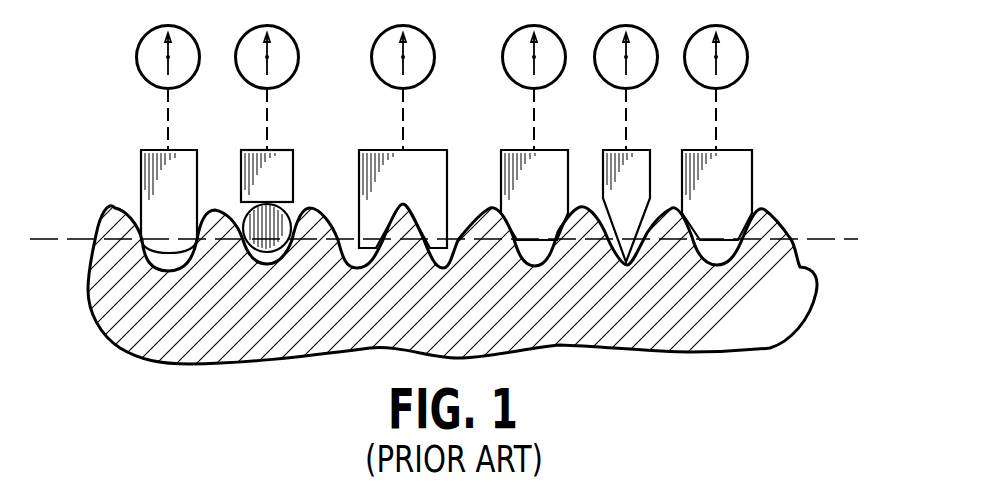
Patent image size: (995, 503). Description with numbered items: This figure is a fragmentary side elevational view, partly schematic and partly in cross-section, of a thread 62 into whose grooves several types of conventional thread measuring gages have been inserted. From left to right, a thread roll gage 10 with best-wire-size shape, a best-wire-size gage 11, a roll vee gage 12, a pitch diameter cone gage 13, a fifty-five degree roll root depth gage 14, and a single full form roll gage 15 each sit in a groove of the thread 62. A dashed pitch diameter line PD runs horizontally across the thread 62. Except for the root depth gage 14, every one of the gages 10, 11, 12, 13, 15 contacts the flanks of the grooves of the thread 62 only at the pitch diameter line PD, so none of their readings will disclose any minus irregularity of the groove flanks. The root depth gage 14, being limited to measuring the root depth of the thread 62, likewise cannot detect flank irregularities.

The thread roll gage with best-wire-size shape 10 is at (152, 172).
The best-wire-size gage 11 is at (277, 157).
The roll vee gage 12 is at (422, 165).
The pitch diameter cone gage 13 is at (547, 163).
The 55° roll root depth gage 14 is at (637, 157).
The single full form roll gage 15 is at (735, 157).
The thread 62 is at (717, 322).
The pitch diameter line PD is at (465, 239).